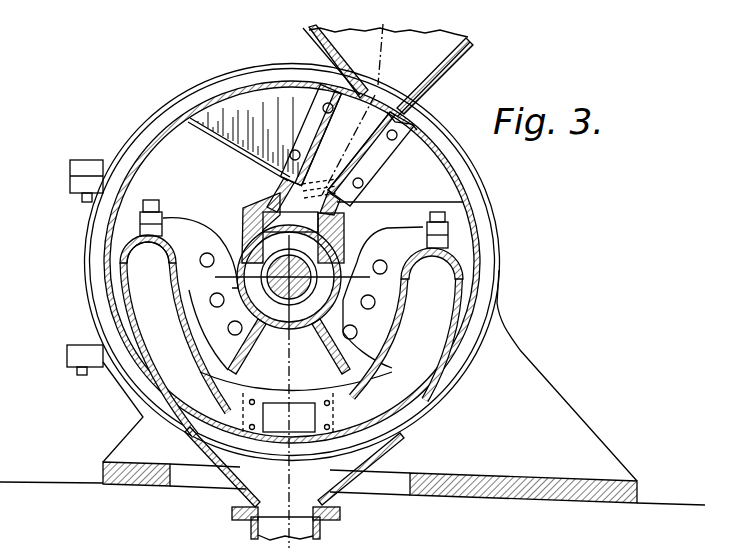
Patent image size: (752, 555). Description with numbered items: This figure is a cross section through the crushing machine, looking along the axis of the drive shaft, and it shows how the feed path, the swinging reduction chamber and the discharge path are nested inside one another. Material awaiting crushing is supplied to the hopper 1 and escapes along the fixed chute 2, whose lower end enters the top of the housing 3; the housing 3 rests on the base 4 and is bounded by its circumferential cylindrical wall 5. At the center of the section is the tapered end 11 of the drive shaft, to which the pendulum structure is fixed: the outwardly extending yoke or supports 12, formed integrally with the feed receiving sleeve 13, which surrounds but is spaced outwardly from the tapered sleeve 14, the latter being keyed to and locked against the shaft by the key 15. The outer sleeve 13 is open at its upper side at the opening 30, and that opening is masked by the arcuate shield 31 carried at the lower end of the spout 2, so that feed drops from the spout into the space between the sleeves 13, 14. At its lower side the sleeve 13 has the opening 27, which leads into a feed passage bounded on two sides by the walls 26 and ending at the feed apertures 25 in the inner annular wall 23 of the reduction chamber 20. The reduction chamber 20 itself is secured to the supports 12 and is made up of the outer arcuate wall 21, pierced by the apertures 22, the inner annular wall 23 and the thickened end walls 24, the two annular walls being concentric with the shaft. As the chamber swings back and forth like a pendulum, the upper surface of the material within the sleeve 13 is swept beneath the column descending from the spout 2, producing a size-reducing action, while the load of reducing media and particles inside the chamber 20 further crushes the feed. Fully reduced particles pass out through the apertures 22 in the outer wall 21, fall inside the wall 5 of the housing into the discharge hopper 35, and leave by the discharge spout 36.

The hopper 1 is at (458, 52).
The fixed chute 2 is at (352, 148).
The housing 3 is at (482, 180).
The base 4 is at (640, 490).
The circumferential cylindrical wall 5 is at (477, 221).
The tapered end 11 is at (250, 275).
The yoke or supports 12 is at (189, 226).
The feed receiving sleeve 13 is at (336, 302).
The tapered sleeve 14 is at (318, 279).
The key 15 is at (302, 262).
The reduction chamber 20 is at (150, 283).
The outer arcuate wall 21 is at (121, 300).
The apertures 22 is at (175, 397).
The inner annular wall 23 is at (181, 318).
The thickened end walls 24 is at (125, 245).
The feed apertures 25 is at (236, 389).
The feed passage walls 26 is at (245, 348).
The opening 27 is at (288, 333).
The upper opening 30 is at (268, 206).
The arcuate shield 31 is at (248, 213).
The discharge hopper 35 is at (375, 465).
The discharge spout 36 is at (320, 530).